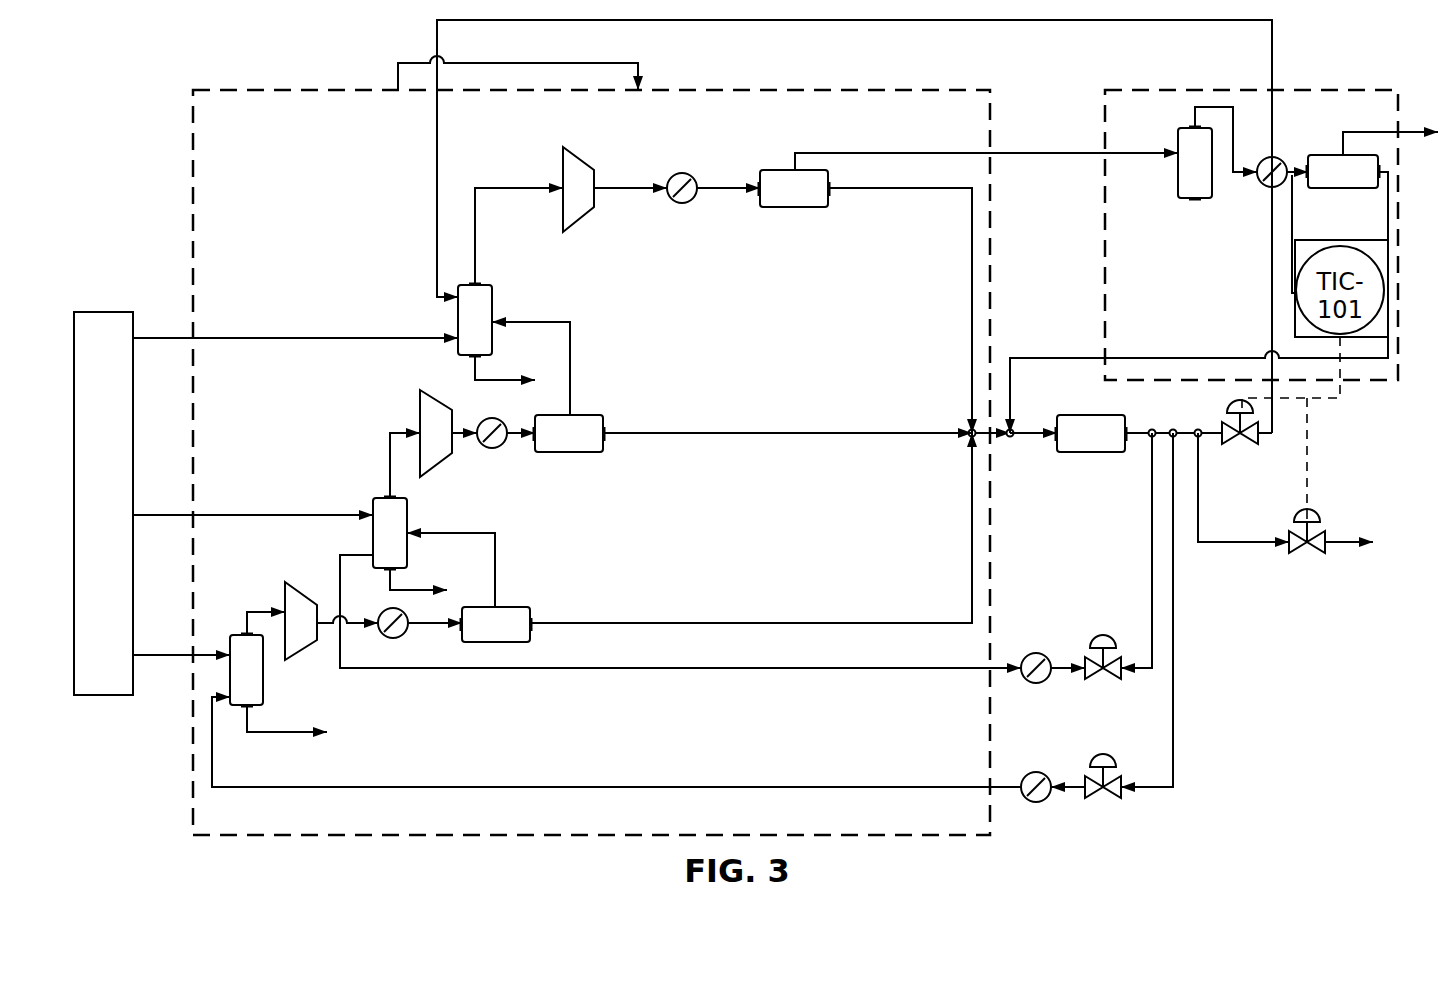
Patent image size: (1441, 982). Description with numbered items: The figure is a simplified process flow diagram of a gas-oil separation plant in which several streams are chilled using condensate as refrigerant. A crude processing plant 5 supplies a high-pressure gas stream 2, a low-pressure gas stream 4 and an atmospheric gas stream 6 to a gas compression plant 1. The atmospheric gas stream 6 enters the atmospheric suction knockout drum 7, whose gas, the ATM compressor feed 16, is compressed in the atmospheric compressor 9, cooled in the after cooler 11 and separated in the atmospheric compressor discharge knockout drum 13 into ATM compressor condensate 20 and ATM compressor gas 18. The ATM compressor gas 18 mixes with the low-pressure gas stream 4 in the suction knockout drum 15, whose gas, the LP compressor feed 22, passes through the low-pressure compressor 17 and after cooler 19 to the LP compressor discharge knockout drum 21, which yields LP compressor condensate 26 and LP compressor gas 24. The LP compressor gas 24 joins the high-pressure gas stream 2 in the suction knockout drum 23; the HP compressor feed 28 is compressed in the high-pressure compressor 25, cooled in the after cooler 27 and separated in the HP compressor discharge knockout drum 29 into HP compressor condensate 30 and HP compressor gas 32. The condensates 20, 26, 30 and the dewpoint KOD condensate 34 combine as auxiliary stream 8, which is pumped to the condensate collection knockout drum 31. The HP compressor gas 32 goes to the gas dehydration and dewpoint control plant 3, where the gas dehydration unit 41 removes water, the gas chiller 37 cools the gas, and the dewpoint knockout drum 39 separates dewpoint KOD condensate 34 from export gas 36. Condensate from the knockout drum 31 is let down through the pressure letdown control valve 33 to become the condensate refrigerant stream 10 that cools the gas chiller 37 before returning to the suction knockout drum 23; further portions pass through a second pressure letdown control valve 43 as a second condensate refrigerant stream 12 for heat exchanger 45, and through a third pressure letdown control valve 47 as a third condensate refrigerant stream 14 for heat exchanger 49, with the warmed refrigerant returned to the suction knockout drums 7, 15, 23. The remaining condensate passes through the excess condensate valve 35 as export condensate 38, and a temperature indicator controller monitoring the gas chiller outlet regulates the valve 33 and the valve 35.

The gas compression plant 1 is at (253, 88).
The high-pressure gas stream 2 is at (170, 338).
The gas dehydration and dewpoint control plant 3 is at (1167, 88).
The low-pressure gas stream 4 is at (170, 515).
The crude processing plant 5 is at (104, 312).
The atmospheric gas stream 6 is at (170, 655).
The atmospheric suction knockout drum 7 is at (263, 685).
The auxiliary stream 8 is at (1028, 436).
The atmospheric compressor 9 is at (295, 590).
The condensate refrigerant stream 10 is at (1272, 312).
The after cooler 11 is at (393, 638).
The second condensate refrigerant stream 12 is at (803, 666).
The atmospheric compressor discharge knockout drum 13 is at (490, 642).
The third condensate refrigerant stream 14 is at (733, 785).
The suction knockout drum 15 is at (373, 505).
The ATM compressor feed 16 is at (253, 612).
The low-pressure compressor 17 is at (420, 400).
The ATM compressor gas 18 is at (478, 532).
The after cooler 19 is at (492, 448).
The ATM compressor condensate 20 is at (603, 625).
The LP compressor discharge knockout drum 21 is at (575, 452).
The LP compressor feed 22 is at (390, 458).
The suction knockout drum 23 is at (458, 320).
The LP compressor gas 24 is at (540, 322).
The high-pressure compressor 25 is at (583, 163).
The LP compressor condensate 26 is at (710, 433).
The after cooler 27 is at (682, 203).
The HP compressor feed 28 is at (527, 186).
The HP compressor discharge knockout drum 29 is at (795, 207).
The HP compressor condensate 30 is at (970, 300).
The condensate collection knockout drum 31 is at (1090, 452).
The HP compressor gas 32 is at (897, 151).
The pressure letdown control valve 33 is at (1243, 440).
The dewpoint KOD condensate 34 is at (1388, 215).
The excess condensate valve 35 is at (1310, 549).
The export gas 36 is at (1430, 128).
The gas chiller 37 is at (1265, 186).
The export condensate 38 is at (1343, 542).
The dewpoint knockout drum 39 is at (1332, 155).
The gas dehydration unit 41 is at (1178, 172).
The second pressure letdown control valve 43 is at (1100, 677).
The heat exchanger 45 is at (1036, 653).
The third pressure letdown control valve 47 is at (1100, 796).
The heat exchanger 49 is at (1036, 772).